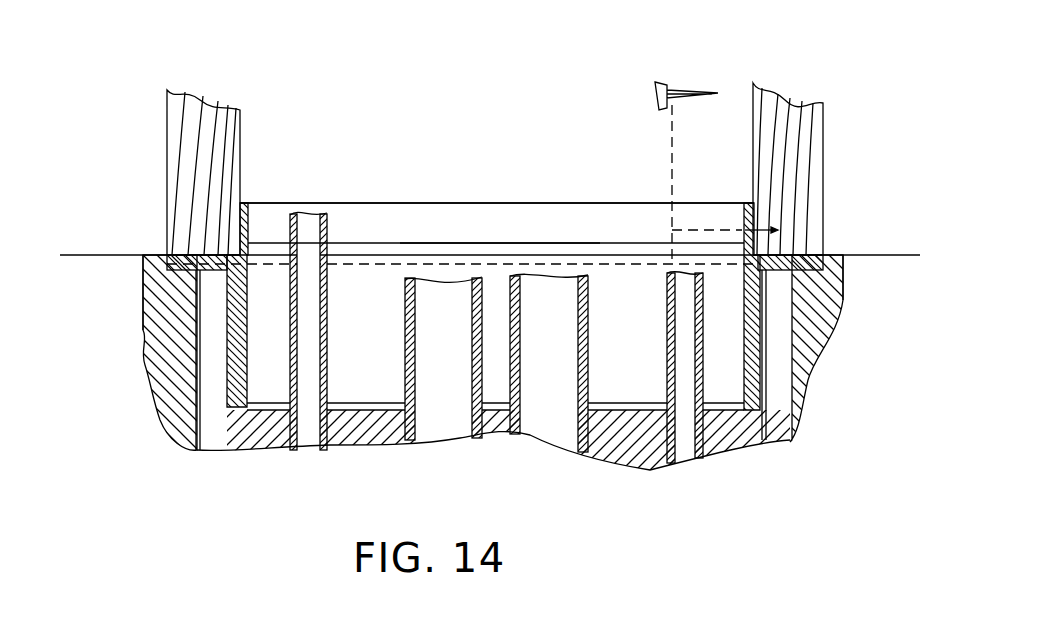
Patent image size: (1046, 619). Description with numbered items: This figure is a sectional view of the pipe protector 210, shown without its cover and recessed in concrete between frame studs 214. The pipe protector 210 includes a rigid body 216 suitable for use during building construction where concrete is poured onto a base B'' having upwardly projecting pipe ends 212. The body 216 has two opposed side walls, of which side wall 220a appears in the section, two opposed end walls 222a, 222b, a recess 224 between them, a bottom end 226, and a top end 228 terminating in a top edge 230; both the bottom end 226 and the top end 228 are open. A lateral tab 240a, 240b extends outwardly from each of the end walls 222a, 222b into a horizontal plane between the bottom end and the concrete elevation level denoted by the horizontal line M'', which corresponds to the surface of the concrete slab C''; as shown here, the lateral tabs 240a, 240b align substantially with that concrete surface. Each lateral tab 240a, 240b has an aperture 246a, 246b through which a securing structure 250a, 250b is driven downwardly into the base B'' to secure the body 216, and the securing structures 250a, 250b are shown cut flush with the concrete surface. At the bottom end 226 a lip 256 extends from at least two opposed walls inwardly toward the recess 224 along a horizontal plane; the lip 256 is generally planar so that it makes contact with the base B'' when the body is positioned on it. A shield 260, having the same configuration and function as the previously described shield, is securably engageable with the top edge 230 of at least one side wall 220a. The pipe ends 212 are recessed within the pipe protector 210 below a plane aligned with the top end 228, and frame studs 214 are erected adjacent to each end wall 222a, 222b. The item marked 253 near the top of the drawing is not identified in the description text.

The pipe protector 210 is at (522, 137).
The pipe ends 212 is at (308, 430).
The frame studs 214 is at (800, 142).
The rigid body 216 is at (347, 203).
The side wall 220a is at (620, 203).
The end wall 222a is at (745, 225).
The end wall 222b is at (243, 203).
The recess 224 is at (618, 380).
The bottom end 226 is at (743, 448).
The top end 228 is at (477, 213).
The top edge 230 is at (433, 203).
The lateral tab 240a is at (807, 255).
The lateral tab 240b is at (170, 270).
The aperture 246a is at (780, 255).
The aperture 246b is at (203, 258).
The securing structure 250a is at (778, 423).
The securing structure 250b is at (210, 433).
The screw 253 is at (693, 85).
The lip 256 is at (240, 400).
The shield 260 is at (530, 217).
The concrete elevation level M'' is at (112, 292).
The concrete slab C'' is at (855, 293).
The base B'' is at (698, 464).